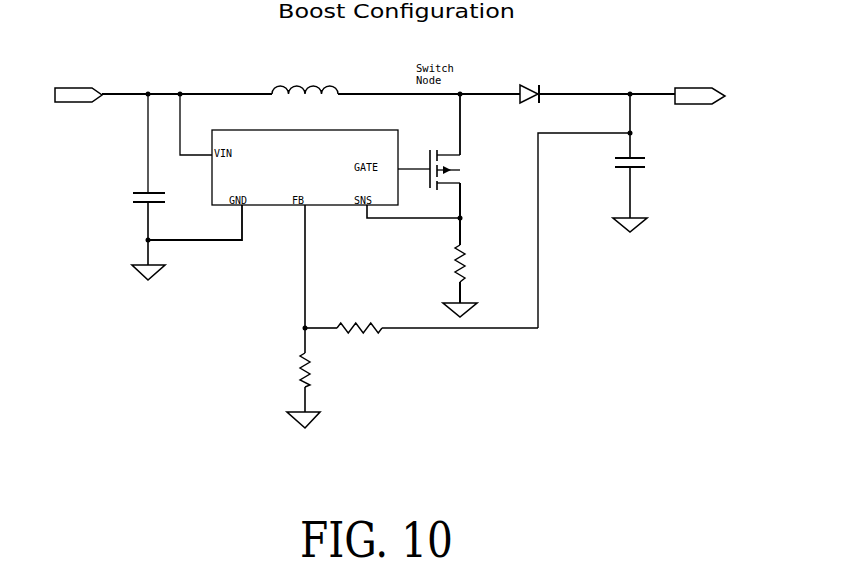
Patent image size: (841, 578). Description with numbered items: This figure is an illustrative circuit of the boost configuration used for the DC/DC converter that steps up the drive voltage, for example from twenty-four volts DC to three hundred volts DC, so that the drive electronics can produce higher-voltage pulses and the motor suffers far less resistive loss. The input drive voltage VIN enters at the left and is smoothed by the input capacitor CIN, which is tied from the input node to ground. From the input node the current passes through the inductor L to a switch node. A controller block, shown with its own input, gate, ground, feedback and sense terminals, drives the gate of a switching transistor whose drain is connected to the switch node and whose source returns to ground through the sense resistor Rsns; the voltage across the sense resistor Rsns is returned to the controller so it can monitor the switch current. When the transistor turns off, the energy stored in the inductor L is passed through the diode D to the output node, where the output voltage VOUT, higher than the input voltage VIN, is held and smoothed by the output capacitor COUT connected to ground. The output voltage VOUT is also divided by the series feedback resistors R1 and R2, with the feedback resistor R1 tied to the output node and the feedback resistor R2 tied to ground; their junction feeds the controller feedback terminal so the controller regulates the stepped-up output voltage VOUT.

The input voltage VIN is at (78, 84).
The input capacitor CIN is at (119, 187).
The inductor L is at (305, 79).
The diode D is at (529, 84).
The output voltage VOUT is at (665, 87).
The output capacitor COUT is at (661, 163).
The sense resistor Rsns is at (431, 267).
The feedback resistor R1 is at (421, 341).
The feedback resistor R2 is at (313, 378).